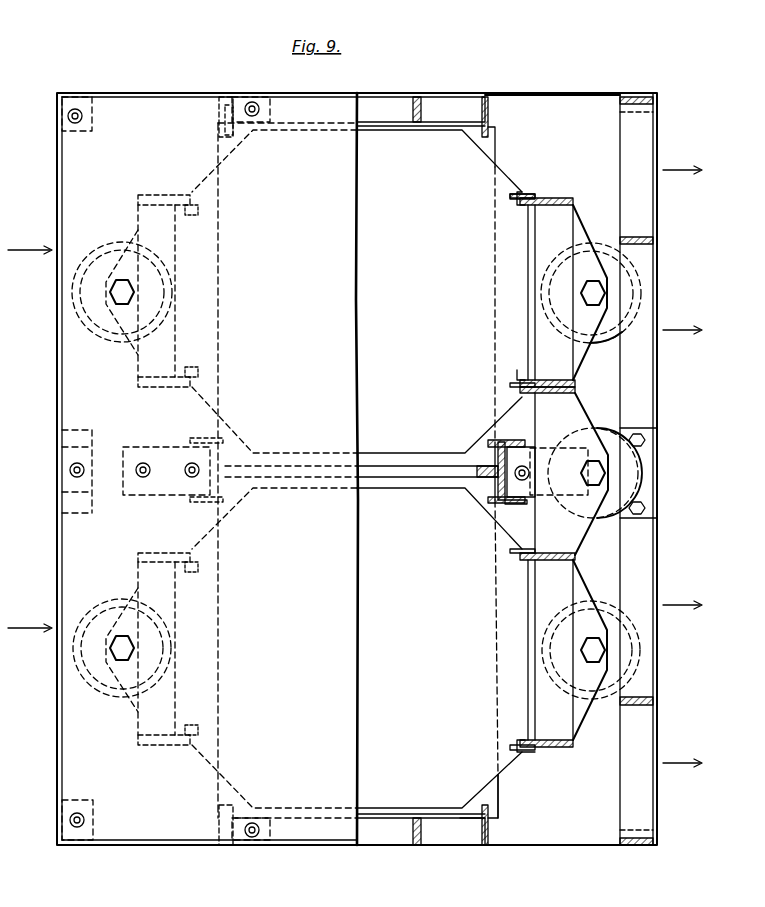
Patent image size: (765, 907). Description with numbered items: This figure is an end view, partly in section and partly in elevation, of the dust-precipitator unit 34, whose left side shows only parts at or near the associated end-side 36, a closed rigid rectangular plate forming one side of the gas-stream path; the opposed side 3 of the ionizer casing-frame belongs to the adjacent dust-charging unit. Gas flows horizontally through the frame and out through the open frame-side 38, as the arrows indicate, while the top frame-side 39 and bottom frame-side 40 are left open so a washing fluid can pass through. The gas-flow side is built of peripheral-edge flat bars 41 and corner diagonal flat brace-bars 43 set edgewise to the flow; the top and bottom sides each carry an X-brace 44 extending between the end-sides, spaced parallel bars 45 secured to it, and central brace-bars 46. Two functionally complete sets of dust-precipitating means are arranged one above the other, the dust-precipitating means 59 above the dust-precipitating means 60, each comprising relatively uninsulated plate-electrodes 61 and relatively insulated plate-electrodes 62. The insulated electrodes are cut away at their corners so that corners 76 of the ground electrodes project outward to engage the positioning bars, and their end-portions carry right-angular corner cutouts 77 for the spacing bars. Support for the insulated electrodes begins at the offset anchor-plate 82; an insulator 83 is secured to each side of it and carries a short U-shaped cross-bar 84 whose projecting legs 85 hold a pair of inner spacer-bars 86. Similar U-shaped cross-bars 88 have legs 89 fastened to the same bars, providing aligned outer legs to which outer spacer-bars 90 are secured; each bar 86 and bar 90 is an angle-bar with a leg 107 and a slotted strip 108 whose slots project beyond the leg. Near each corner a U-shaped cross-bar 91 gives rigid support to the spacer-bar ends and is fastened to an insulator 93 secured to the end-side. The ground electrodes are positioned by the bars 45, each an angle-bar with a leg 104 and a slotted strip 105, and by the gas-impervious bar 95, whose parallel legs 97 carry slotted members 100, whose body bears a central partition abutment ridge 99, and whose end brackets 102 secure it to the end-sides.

The opposed side 3 is at (57, 660).
The dust-precipitator unit 34 is at (296, 845).
The end-side 36 is at (358, 712).
The open frame-side 38 is at (656, 388).
The top frame-side 39 is at (575, 88).
The bottom frame-side 40 is at (560, 846).
The peripheral-edge flat bar 41 is at (655, 100).
The corner diagonal flat brace-bar 43 is at (640, 238).
The X-brace 44 is at (420, 100).
The spaced parallel bar 45 is at (232, 97).
The central brace-bar 46 is at (450, 105).
The dust-precipitating means 59 is at (293, 470).
The dust-precipitating means 60 is at (293, 648).
The uninsulated plate-electrode 61 is at (487, 150).
The insulated plate-electrode 62 is at (500, 184).
The corner 76 is at (475, 452).
The corner cutout 77 is at (520, 740).
The anchor-plate 82 is at (642, 490).
The insulator 83 is at (607, 438).
The U-shaped cross-bar 84 is at (577, 536).
The projecting leg 85 is at (542, 394).
The inner spacer-bar 86 is at (578, 390).
The U-shaped cross-bar 88 is at (545, 236).
The leg 89 is at (556, 205).
The outer spacer-bar 90 is at (560, 197).
The U-shaped cross-bar 91 is at (580, 577).
The insulator 93 is at (608, 258).
The bar 95 is at (513, 504).
The leg 97 is at (195, 503).
The partition abutment ridge 99 is at (487, 478).
The slotted member 100 is at (516, 441).
The end bracket 102 is at (528, 452).
The leg 104 is at (476, 830).
The slotted strip 105 is at (489, 120).
The leg 107 is at (518, 200).
The slotted strip 108 is at (530, 196).